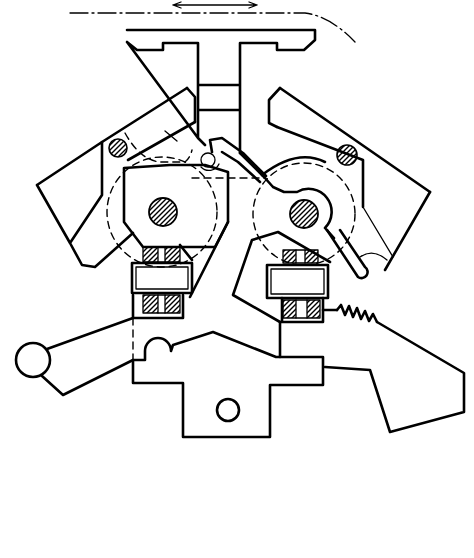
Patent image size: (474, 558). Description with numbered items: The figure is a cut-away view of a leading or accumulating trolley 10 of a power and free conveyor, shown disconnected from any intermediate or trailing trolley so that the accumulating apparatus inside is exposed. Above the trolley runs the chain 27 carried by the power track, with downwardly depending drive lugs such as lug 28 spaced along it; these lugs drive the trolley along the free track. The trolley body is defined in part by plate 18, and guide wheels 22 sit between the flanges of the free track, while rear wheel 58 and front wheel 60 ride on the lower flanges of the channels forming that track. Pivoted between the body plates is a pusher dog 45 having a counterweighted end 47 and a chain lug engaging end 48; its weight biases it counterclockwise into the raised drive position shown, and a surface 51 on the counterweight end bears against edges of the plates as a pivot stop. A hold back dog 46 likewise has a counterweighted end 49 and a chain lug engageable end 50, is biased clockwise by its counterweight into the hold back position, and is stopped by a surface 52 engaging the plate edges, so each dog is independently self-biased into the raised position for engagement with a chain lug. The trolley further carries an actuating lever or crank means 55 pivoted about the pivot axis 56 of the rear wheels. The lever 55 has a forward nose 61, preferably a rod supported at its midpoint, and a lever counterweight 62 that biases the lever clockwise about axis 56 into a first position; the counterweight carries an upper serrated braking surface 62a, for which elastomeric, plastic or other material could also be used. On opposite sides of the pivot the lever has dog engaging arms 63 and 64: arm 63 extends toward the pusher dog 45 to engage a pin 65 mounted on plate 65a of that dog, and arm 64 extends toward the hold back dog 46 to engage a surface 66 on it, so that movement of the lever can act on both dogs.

The leading or accumulating trolley 10 is at (96, 440).
The trolley body plate 18 is at (228, 384).
The guide wheels 22 is at (133, 283).
The chain 27 is at (228, 35).
The trolley drive lug 28 is at (250, 62).
The pusher dog 45 is at (132, 113).
The hold back dog 46 is at (348, 125).
The counterweighted end 47 is at (56, 182).
The chain lug engaging end 48 is at (188, 98).
The counterweighted end 49 is at (400, 188).
The chain lug engageable end 50 is at (282, 100).
The surface 51 is at (108, 172).
The surface 52 is at (366, 166).
The actuating lever or crank means 55 is at (209, 327).
The pivot axis 56 is at (292, 213).
The rear wheel 58 is at (302, 162).
The front wheel 60 is at (117, 270).
The forward or leading end or nose 61 is at (36, 356).
The lever counterweight 62 is at (414, 365).
The upper serrated braking surface 62a is at (372, 324).
The dog engaging arm 63 is at (223, 152).
The dog engaging arm 64 is at (365, 283).
The pin 65 is at (167, 212).
The plate 65a is at (172, 138).
The surface 66 is at (388, 264).